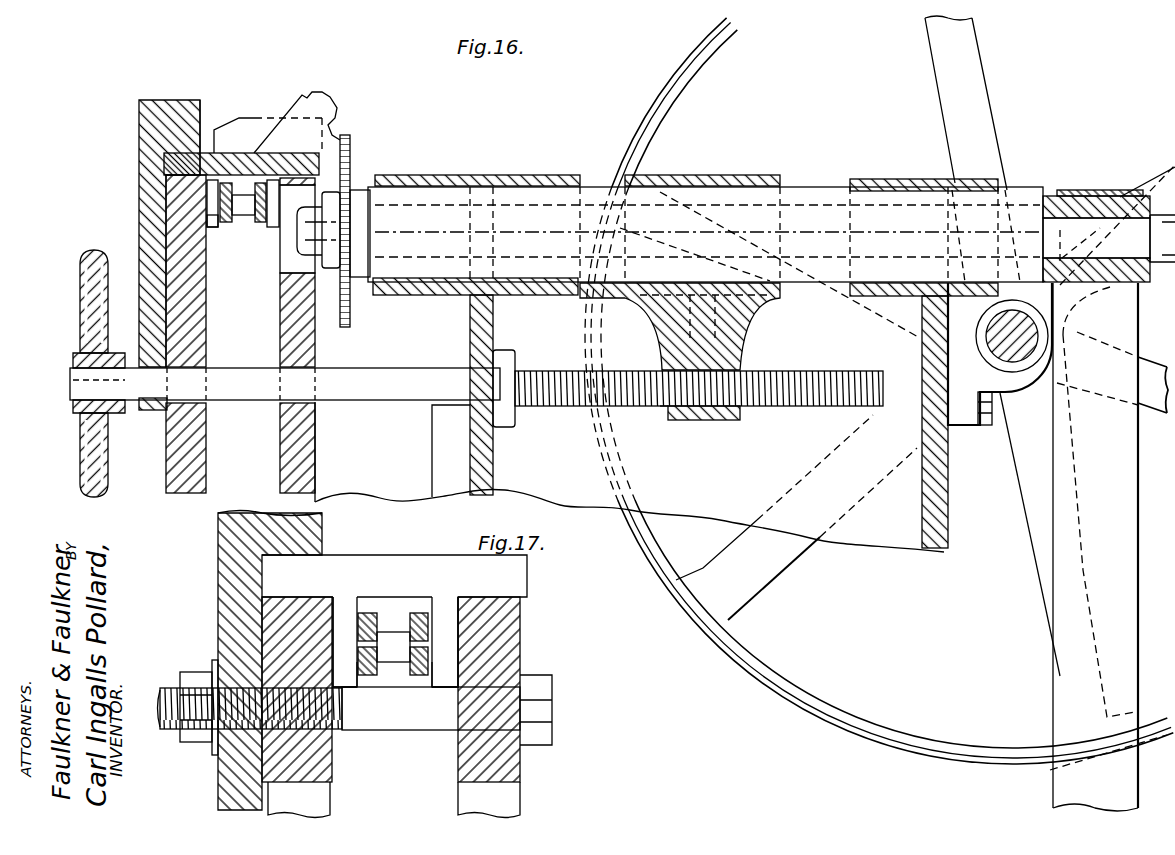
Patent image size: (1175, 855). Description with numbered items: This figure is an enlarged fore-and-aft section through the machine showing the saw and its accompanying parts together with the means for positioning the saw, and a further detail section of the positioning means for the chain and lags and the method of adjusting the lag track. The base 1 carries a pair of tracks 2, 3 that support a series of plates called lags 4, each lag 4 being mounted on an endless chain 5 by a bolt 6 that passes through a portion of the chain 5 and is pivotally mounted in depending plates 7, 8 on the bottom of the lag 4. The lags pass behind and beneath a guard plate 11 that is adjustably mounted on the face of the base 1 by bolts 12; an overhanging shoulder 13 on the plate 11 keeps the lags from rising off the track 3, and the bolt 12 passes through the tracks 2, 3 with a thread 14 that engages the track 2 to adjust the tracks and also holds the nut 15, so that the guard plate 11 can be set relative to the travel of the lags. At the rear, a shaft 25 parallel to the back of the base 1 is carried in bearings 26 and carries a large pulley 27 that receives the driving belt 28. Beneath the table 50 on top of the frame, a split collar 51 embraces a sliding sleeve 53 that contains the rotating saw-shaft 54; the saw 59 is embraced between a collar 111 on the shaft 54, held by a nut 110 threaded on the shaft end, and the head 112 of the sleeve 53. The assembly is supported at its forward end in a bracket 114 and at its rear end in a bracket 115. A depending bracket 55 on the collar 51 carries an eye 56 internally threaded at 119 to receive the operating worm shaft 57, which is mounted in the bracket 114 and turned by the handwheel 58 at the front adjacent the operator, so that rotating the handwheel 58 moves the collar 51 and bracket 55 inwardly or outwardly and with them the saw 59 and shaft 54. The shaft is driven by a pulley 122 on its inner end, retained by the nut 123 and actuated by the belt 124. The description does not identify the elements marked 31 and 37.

In FIG. 16, the base 1 is at (330, 428).
In FIG. 16, the track 2 is at (166, 462).
In FIG. 17, the track 2 is at (315, 803).
In FIG. 16, the track 3 is at (285, 465).
In FIG. 17, the track 3 is at (465, 803).
In FIG. 16, the lag 4 is at (170, 165).
In FIG. 17, the lag 4 is at (399, 561).
In FIG. 16, the endless chain 5 is at (228, 183).
In FIG. 17, the endless chain 5 is at (368, 622).
In FIG. 16, the bolt 6 is at (207, 205).
In FIG. 17, the bolt 6 is at (382, 645).
In FIG. 16, the depending plate 7 is at (207, 224).
In FIG. 17, the depending plate 7 is at (350, 688).
In FIG. 16, the depending plate 8 is at (270, 230).
In FIG. 17, the depending plate 8 is at (442, 672).
In FIG. 16, the guard plate 11 is at (139, 126).
In FIG. 17, the guard plate 11 is at (218, 572).
In FIG. 17, the bolt 12 is at (168, 688).
In FIG. 16, the overhanging shoulder 13 is at (200, 115).
In FIG. 17, the overhanging shoulder 13 is at (322, 536).
In FIG. 17, the thread 14 is at (310, 728).
In FIG. 17, the nut 15 is at (196, 680).
In FIG. 16, the shaft 25 is at (1018, 350).
In FIG. 16, the bearing 26 is at (968, 415).
In FIG. 16, the large pulley 27 is at (772, 672).
In FIG. 16, the driving belt 28 is at (790, 700).
In FIG. 16, the ratchet pawl support 31 is at (255, 118).
In FIG. 16, the pawl 37 is at (322, 98).
In FIG. 16, the table 50 is at (790, 186).
In FIG. 16, the split collar 51 is at (748, 175).
In FIG. 16, the sliding sleeve 53 is at (815, 196).
In FIG. 16, the saw-shaft 54 is at (300, 245).
In FIG. 16, the depending bracket 55 is at (768, 316).
In FIG. 16, the eye 56 is at (706, 421).
In FIG. 16, the operating worm shaft 57 is at (798, 408).
In FIG. 16, the handwheel 58 is at (80, 283).
In FIG. 16, the saw 59 is at (350, 140).
In FIG. 16, the nut 110 is at (315, 252).
In FIG. 16, the collar 111 is at (333, 272).
In FIG. 16, the head of the sleeve 112 is at (356, 195).
In FIG. 16, the bracket 114 is at (437, 298).
In FIG. 16, the bracket 115 is at (882, 180).
In FIG. 16, the internal thread of the eye 119 is at (666, 410).
In FIG. 16, the pulley 122 is at (1110, 200).
In FIG. 16, the nut 123 is at (1150, 240).
In FIG. 16, the belt 124 is at (1085, 190).